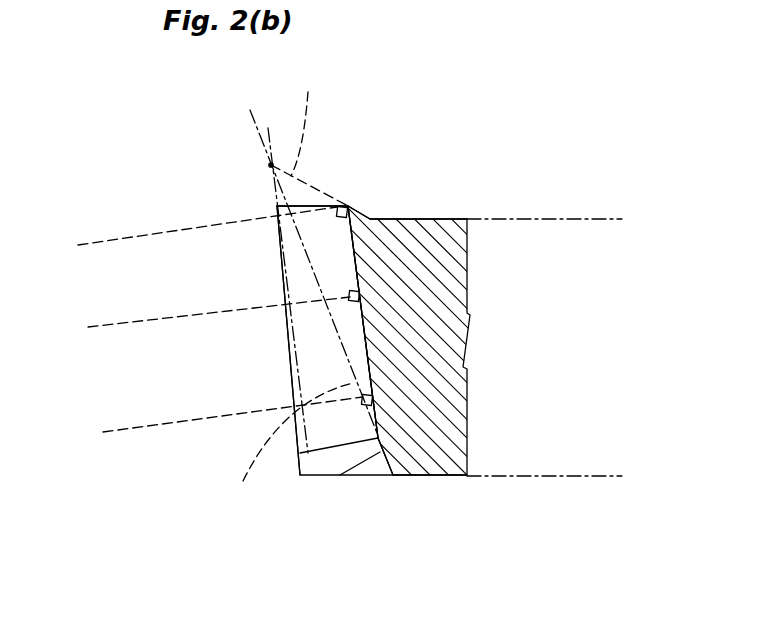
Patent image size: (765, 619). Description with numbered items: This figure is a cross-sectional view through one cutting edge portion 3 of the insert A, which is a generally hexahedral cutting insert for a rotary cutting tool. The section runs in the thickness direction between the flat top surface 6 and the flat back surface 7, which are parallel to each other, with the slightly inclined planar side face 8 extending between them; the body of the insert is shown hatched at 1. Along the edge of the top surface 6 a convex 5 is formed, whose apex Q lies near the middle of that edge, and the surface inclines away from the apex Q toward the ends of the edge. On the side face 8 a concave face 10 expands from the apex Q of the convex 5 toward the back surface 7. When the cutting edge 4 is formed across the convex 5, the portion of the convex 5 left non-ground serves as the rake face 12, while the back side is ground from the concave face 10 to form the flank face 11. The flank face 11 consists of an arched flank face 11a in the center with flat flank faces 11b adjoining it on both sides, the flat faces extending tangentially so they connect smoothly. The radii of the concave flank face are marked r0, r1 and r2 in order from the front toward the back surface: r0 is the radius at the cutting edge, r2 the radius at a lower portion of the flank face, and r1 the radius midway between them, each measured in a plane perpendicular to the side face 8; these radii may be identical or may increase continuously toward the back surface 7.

The tool body 1 is at (457, 260).
The cutting edge portion 3 is at (361, 278).
The cutting edge 4 is at (348, 206).
The convex 5 is at (304, 121).
The top surface 6 is at (438, 218).
The back surface 7 is at (437, 478).
The side face 8 is at (284, 315).
The concave face 10 is at (340, 475).
The flank face 11 is at (273, 340).
The arched flank face 11a is at (330, 372).
The flat flank face 11b is at (288, 272).
The rake face 12 is at (366, 213).
The insert A is at (475, 140).
The apex Q is at (269, 163).
The radius at the front surface r0 is at (198, 234).
The radius at a middle portion r1 is at (210, 317).
The radius at a lower portion r2 is at (223, 423).